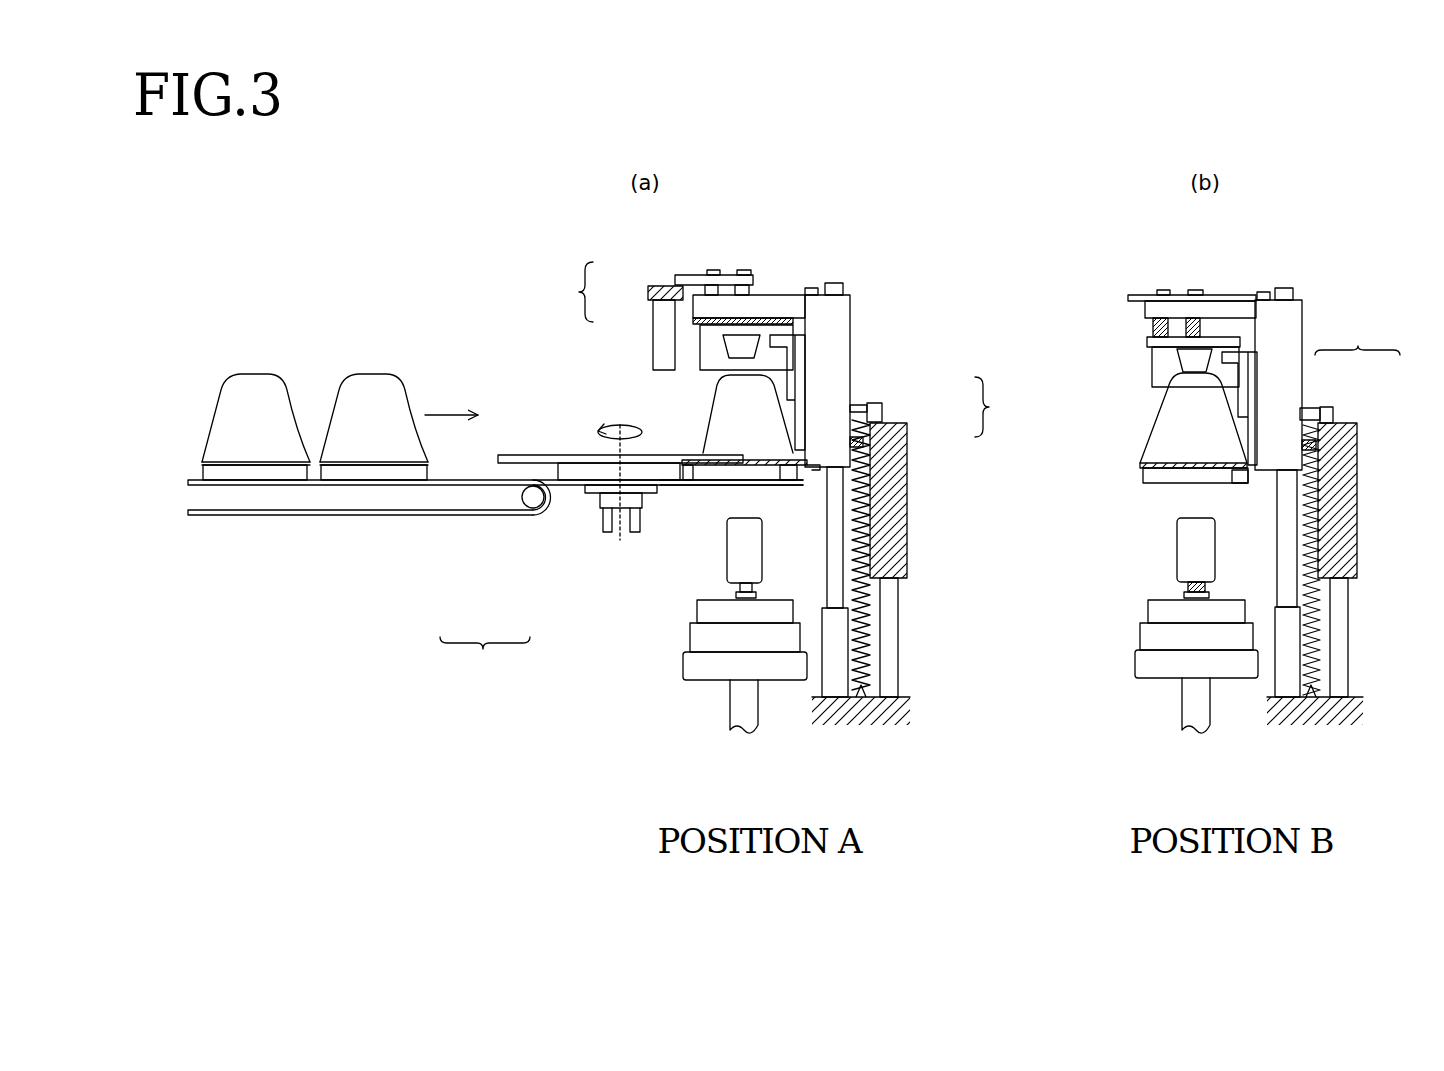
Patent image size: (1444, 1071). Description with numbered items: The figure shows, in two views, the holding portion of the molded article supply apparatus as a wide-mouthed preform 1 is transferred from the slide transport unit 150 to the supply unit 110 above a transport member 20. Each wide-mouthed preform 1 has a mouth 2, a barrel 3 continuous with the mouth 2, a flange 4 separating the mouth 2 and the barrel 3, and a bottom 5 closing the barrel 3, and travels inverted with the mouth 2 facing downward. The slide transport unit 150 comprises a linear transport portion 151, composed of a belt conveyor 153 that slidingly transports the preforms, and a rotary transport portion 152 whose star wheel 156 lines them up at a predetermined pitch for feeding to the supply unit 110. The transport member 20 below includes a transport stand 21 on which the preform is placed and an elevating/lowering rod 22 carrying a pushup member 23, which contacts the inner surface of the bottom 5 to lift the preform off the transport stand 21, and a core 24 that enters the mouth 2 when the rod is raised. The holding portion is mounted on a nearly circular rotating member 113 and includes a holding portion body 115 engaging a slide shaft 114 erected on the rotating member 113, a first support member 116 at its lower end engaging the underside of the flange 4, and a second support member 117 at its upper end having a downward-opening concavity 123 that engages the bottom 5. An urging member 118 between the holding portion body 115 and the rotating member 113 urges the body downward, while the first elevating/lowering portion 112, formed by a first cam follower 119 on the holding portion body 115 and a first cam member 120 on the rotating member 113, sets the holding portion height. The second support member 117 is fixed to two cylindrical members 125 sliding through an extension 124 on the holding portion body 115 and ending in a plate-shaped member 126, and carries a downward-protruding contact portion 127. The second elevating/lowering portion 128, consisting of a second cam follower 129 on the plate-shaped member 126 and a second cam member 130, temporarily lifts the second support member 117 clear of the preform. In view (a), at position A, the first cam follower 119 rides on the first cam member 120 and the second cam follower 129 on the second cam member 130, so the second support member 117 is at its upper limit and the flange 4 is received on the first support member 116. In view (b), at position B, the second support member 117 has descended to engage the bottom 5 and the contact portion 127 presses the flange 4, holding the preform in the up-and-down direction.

The wide-mouthed preform 1 is at (265, 360).
The mouth 2 is at (255, 470).
The barrel 3 is at (225, 412).
The flange 4 is at (205, 462).
The bottom 5 is at (240, 377).
The transport member 20 is at (953, 649).
The transport stand 21 is at (712, 640).
The elevating/lowering rod 22 is at (755, 725).
The pushup member 23 is at (740, 556).
The core 24 is at (715, 614).
The supply unit 110 is at (855, 258).
The first elevating/lowering portion 112 is at (1187, 375).
The rotating member 113 is at (852, 715).
The slide shaft 114 is at (840, 548).
The holding portion body 115 is at (848, 332).
The first support member 116 is at (787, 484).
The second support member 117 is at (700, 350).
The urging member 118 is at (860, 617).
The first cam follower 119 is at (880, 410).
The first cam member 120 is at (905, 440).
The concavity 123 is at (727, 362).
The extension 124 is at (787, 305).
The cylindrical member 125 is at (748, 290).
The plate-shaped member 126 is at (735, 273).
The contact portion 127 is at (805, 425).
The second elevating/lowering portion 128 is at (562, 292).
The second cam follower 129 is at (672, 278).
The second cam member 130 is at (650, 297).
The slide transport unit 150 is at (485, 654).
The linear transport portion 151 is at (440, 560).
The rotary transport portion 152 is at (530, 560).
The belt conveyor 153 is at (487, 487).
The star wheel 156 is at (573, 455).